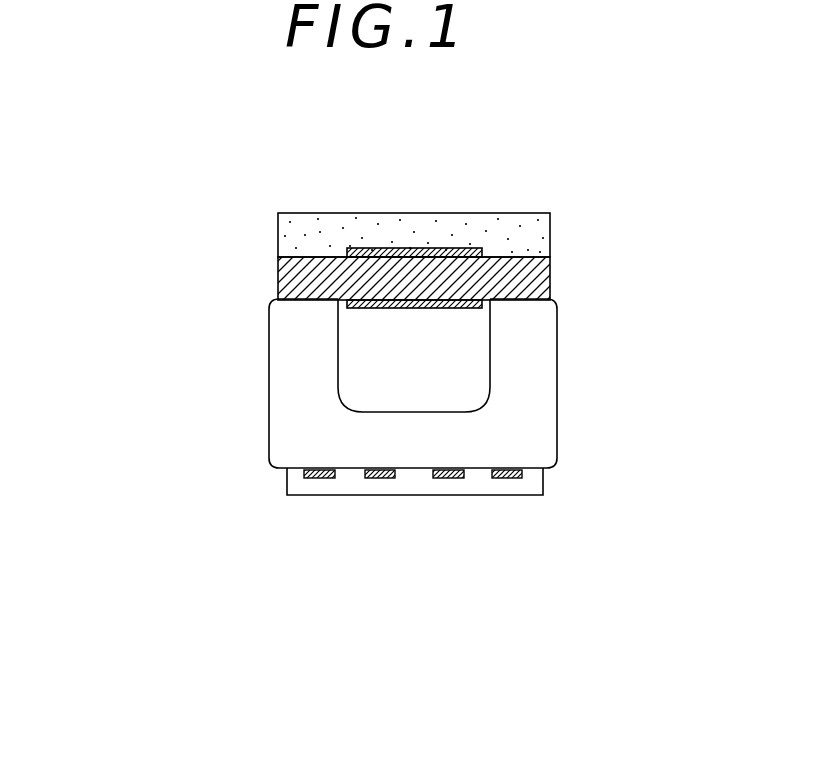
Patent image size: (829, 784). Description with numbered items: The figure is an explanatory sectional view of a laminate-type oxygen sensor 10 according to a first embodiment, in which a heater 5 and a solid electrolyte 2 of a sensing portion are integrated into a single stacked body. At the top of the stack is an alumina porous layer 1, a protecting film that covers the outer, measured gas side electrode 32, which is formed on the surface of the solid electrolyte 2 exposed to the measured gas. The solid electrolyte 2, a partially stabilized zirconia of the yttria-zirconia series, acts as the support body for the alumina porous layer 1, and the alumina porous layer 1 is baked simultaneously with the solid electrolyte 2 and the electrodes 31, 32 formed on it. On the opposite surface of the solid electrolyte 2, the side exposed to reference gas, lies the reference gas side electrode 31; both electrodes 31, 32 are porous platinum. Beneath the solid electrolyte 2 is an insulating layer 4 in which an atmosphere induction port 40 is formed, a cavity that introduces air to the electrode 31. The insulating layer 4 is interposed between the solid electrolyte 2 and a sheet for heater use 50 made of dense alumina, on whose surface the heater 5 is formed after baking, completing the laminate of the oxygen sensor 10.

The oxygen sensor 10 is at (312, 603).
The alumina porous layer 1 is at (498, 225).
The electrode 32 is at (480, 247).
The solid electrolyte 2 is at (542, 278).
The electrode 31 is at (452, 308).
The insulating layer 4 is at (317, 425).
The atmosphere induction port 40 is at (450, 383).
The sheet for heater use 50 is at (357, 485).
The heater 5 is at (503, 476).